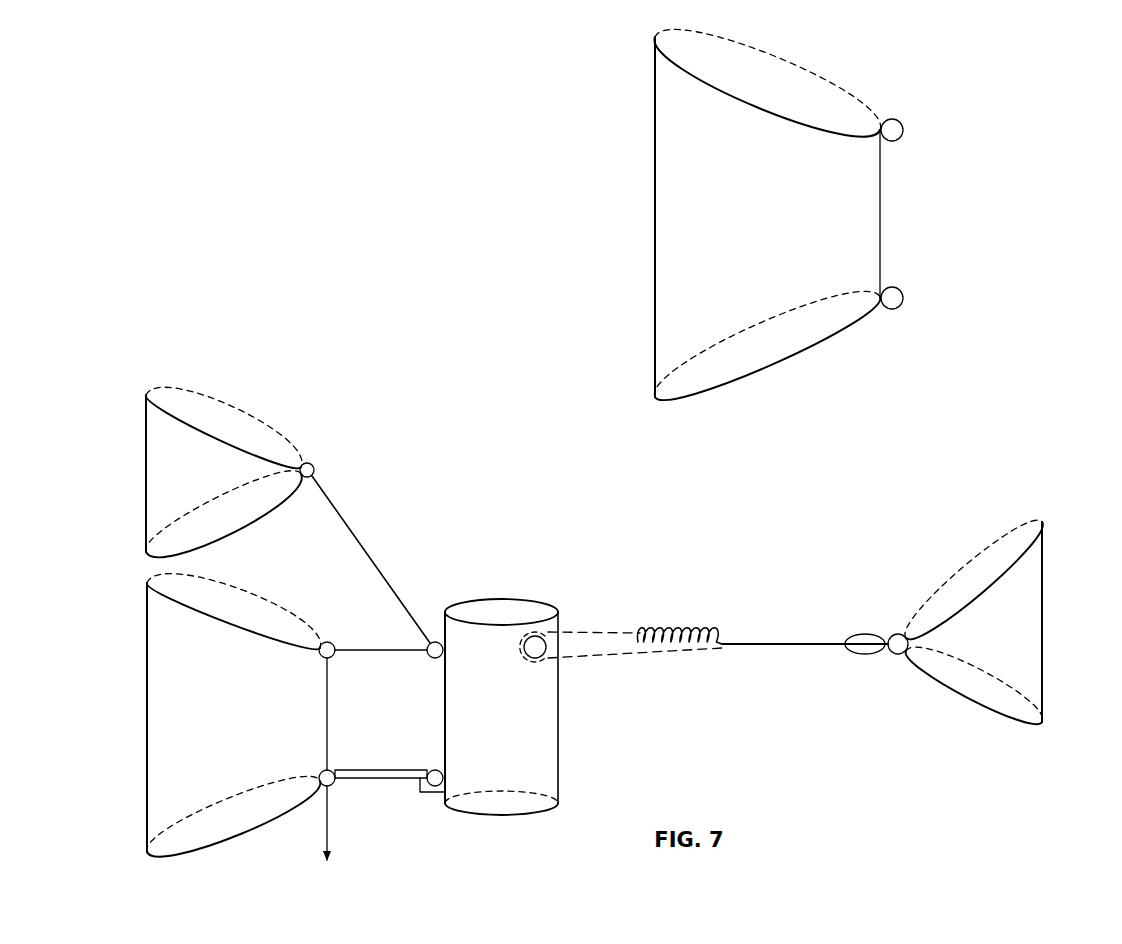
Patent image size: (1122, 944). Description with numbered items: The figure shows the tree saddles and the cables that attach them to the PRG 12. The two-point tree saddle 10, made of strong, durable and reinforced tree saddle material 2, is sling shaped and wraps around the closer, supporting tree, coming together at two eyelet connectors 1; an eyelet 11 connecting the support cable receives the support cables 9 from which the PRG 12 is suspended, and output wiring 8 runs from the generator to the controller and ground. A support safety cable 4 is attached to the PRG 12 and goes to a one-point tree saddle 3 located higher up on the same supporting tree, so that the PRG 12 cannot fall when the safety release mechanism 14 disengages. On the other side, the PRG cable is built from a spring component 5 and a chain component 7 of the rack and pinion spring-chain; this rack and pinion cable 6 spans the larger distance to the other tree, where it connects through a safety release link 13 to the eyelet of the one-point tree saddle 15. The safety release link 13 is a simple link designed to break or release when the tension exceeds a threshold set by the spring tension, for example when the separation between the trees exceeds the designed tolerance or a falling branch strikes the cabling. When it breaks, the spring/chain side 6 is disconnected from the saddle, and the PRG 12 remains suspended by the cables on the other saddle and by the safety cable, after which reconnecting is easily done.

The eyelet connectors 1 is at (903, 128).
The tree saddle material 2 is at (655, 293).
The one-point tree saddle connection 3 is at (318, 469).
The support safety cable 4 is at (385, 558).
The spring component 5 is at (672, 628).
The rack and pinion cable 6 is at (775, 648).
The chain component 7 is at (620, 655).
The output wiring 8 is at (382, 770).
The support cables 9 is at (380, 778).
The two-point tree saddle 10 is at (148, 777).
The eyelet 11 is at (327, 642).
The PRG 12 is at (560, 763).
The safety release link 13 is at (863, 634).
The safety release mechanism 14 is at (897, 656).
The one-point tree saddle 15 is at (1045, 618).